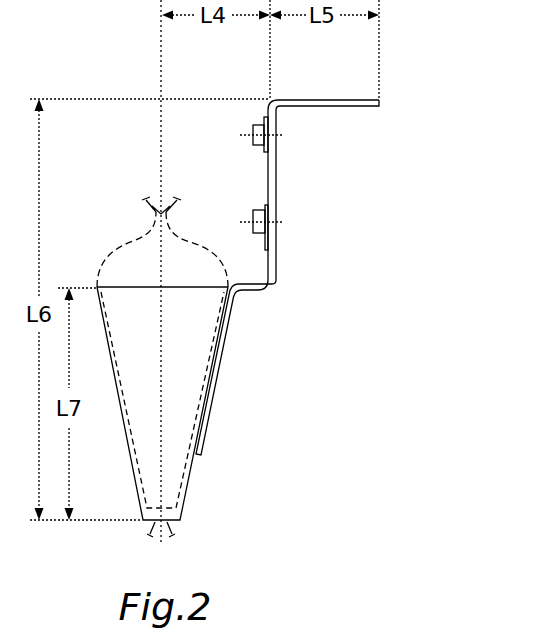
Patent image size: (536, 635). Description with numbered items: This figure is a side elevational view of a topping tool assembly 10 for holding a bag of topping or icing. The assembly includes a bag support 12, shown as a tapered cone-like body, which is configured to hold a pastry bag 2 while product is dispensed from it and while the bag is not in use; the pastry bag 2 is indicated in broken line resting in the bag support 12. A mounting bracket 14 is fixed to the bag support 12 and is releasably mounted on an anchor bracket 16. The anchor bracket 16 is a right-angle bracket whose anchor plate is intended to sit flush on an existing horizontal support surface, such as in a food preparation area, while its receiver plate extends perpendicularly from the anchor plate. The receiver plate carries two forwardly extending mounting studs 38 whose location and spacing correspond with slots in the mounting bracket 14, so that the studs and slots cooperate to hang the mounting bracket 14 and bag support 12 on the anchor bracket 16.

The pastry bag 2 is at (122, 246).
The topping tool assembly 10 is at (306, 277).
The bag support 12 is at (195, 487).
The mounting bracket 14 is at (252, 292).
The anchor bracket 16 is at (312, 106).
The mounting studs 38 is at (254, 212).